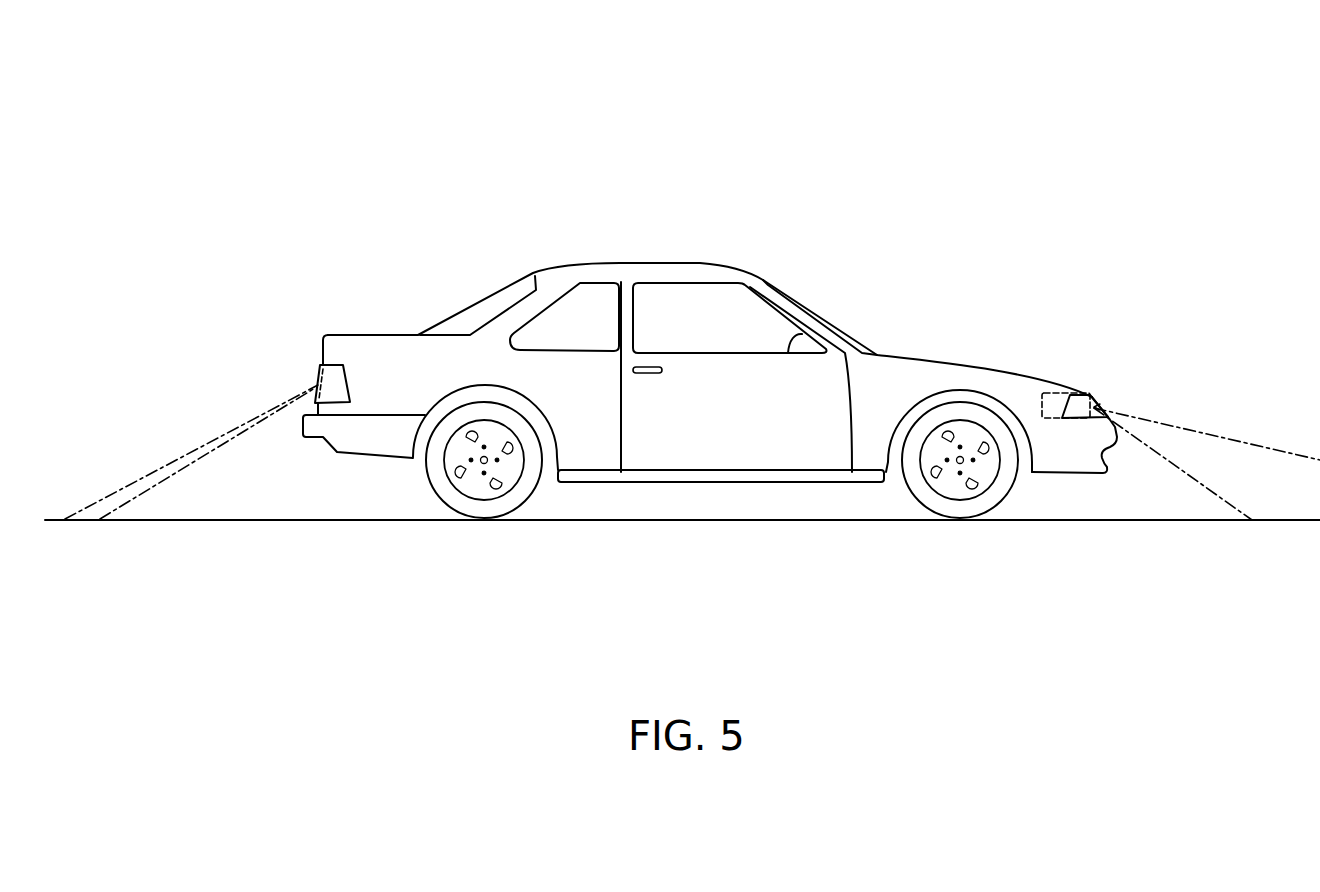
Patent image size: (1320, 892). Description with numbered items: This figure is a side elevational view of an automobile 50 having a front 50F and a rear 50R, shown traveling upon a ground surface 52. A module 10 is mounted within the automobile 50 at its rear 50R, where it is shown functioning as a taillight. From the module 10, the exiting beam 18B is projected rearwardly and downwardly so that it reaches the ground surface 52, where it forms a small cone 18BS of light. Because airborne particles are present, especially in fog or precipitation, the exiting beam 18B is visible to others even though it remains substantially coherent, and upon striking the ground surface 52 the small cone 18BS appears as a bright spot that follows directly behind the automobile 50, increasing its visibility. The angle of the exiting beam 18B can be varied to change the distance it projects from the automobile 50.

The automobile 50 is at (693, 268).
The rear 50R is at (323, 347).
The front 50F is at (1107, 460).
The module 10 is at (322, 368).
The exiting beam 18B is at (253, 415).
The small cone 18BS is at (95, 497).
The ground surface 52 is at (338, 517).